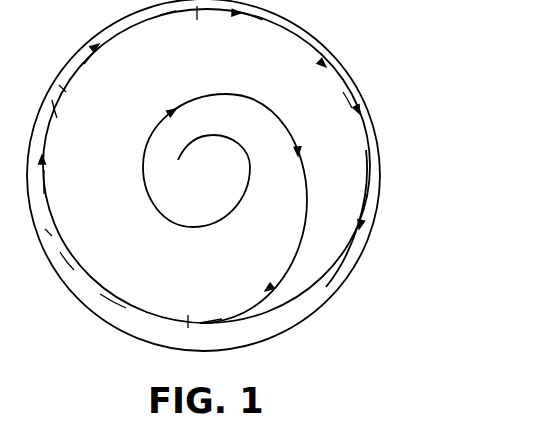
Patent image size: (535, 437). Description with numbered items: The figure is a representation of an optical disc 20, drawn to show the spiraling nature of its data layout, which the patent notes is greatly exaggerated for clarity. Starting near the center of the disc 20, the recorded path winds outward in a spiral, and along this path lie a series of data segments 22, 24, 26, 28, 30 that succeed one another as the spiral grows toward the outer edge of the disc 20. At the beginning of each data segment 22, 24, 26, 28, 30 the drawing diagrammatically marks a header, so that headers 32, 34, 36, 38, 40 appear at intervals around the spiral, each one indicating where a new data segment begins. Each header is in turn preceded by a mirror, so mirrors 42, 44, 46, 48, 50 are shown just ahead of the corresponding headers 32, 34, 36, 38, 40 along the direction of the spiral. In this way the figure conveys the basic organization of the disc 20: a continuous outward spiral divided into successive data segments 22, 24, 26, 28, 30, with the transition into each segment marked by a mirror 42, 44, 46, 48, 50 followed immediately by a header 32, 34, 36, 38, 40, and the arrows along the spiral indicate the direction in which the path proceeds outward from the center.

The optical disc 20 is at (344, 58).
The data segment 22 is at (113, 300).
The data segment 24 is at (45, 182).
The data segment 26 is at (91, 55).
The data segment 28 is at (256, 20).
The data segment 30 is at (366, 151).
The header 32 is at (188, 318).
The header 34 is at (49, 233).
The header 36 is at (65, 90).
The header 38 is at (197, 15).
The header 40 is at (348, 100).
The mirror 42 is at (208, 318).
The mirror 44 is at (68, 260).
The mirror 46 is at (53, 105).
The mirror 48 is at (167, 15).
The mirror 50 is at (358, 113).